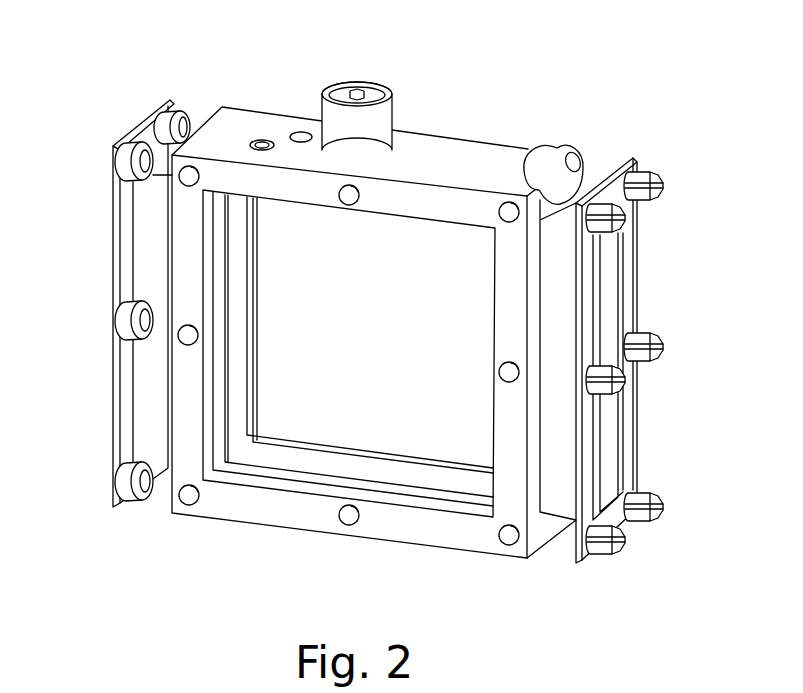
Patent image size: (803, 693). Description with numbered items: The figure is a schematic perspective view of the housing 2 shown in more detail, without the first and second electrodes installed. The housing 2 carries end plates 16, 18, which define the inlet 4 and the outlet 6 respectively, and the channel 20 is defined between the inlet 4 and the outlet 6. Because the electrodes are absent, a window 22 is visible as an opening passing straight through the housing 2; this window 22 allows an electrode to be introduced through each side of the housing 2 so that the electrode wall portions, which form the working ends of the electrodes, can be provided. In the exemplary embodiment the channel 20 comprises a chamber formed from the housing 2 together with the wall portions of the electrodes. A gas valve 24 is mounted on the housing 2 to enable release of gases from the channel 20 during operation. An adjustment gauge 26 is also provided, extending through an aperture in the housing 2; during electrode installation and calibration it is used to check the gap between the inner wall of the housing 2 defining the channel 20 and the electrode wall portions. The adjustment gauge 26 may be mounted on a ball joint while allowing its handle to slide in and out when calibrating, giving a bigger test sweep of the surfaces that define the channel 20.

The housing 2 is at (478, 148).
The inlet 4 is at (608, 427).
The outlet 6 is at (112, 263).
The end plate 16 is at (628, 278).
The end plate 18 is at (118, 143).
The channel 20 is at (343, 462).
The window 22 is at (443, 435).
The gas valve 24 is at (392, 104).
The adjustment gauge 26 is at (555, 156).